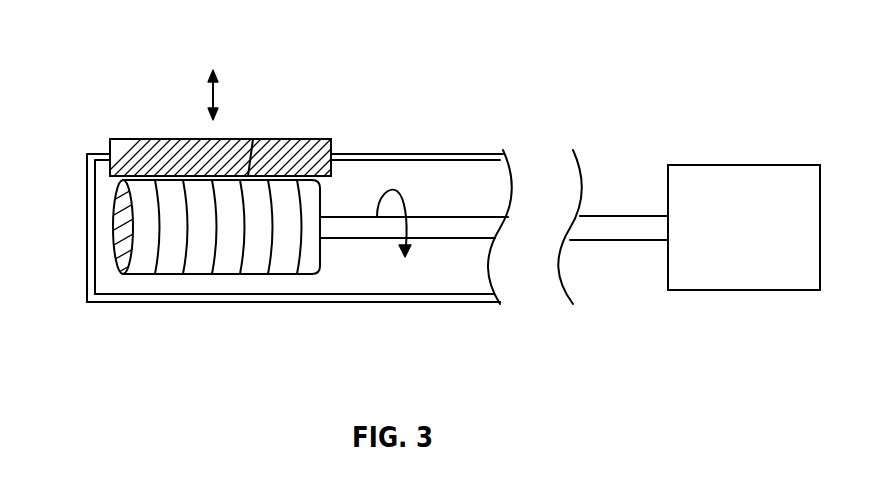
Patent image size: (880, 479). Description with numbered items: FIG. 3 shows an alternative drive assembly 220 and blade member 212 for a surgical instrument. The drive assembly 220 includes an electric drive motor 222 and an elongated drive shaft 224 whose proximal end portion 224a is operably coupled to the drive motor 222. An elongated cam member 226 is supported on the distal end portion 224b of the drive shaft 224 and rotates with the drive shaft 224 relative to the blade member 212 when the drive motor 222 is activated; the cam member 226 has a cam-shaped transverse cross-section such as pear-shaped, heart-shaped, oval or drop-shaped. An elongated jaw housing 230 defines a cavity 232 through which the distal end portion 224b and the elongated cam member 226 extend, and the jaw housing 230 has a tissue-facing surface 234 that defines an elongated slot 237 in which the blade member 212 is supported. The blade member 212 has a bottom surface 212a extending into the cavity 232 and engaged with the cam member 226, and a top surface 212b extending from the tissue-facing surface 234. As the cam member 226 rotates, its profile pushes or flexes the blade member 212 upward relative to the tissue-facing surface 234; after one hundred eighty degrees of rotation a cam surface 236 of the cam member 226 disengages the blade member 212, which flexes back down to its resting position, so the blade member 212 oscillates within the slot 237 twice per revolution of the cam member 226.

The blade member 212 is at (332, 149).
The bottom surface 212a is at (113, 178).
The top surface 212b is at (137, 138).
The drive assembly 220 is at (595, 86).
The electric drive motor 222 is at (745, 163).
The drive shaft 224 is at (613, 206).
The proximal end portion 224a is at (640, 230).
The distal end portion 224b is at (444, 227).
The elongated cam member 226 is at (218, 276).
The elongated jaw housing 230 is at (389, 308).
The cavity 232 is at (367, 186).
The tissue-facing surface 234 is at (485, 156).
The cam surface 236 is at (257, 140).
The elongated slot 237 is at (102, 145).